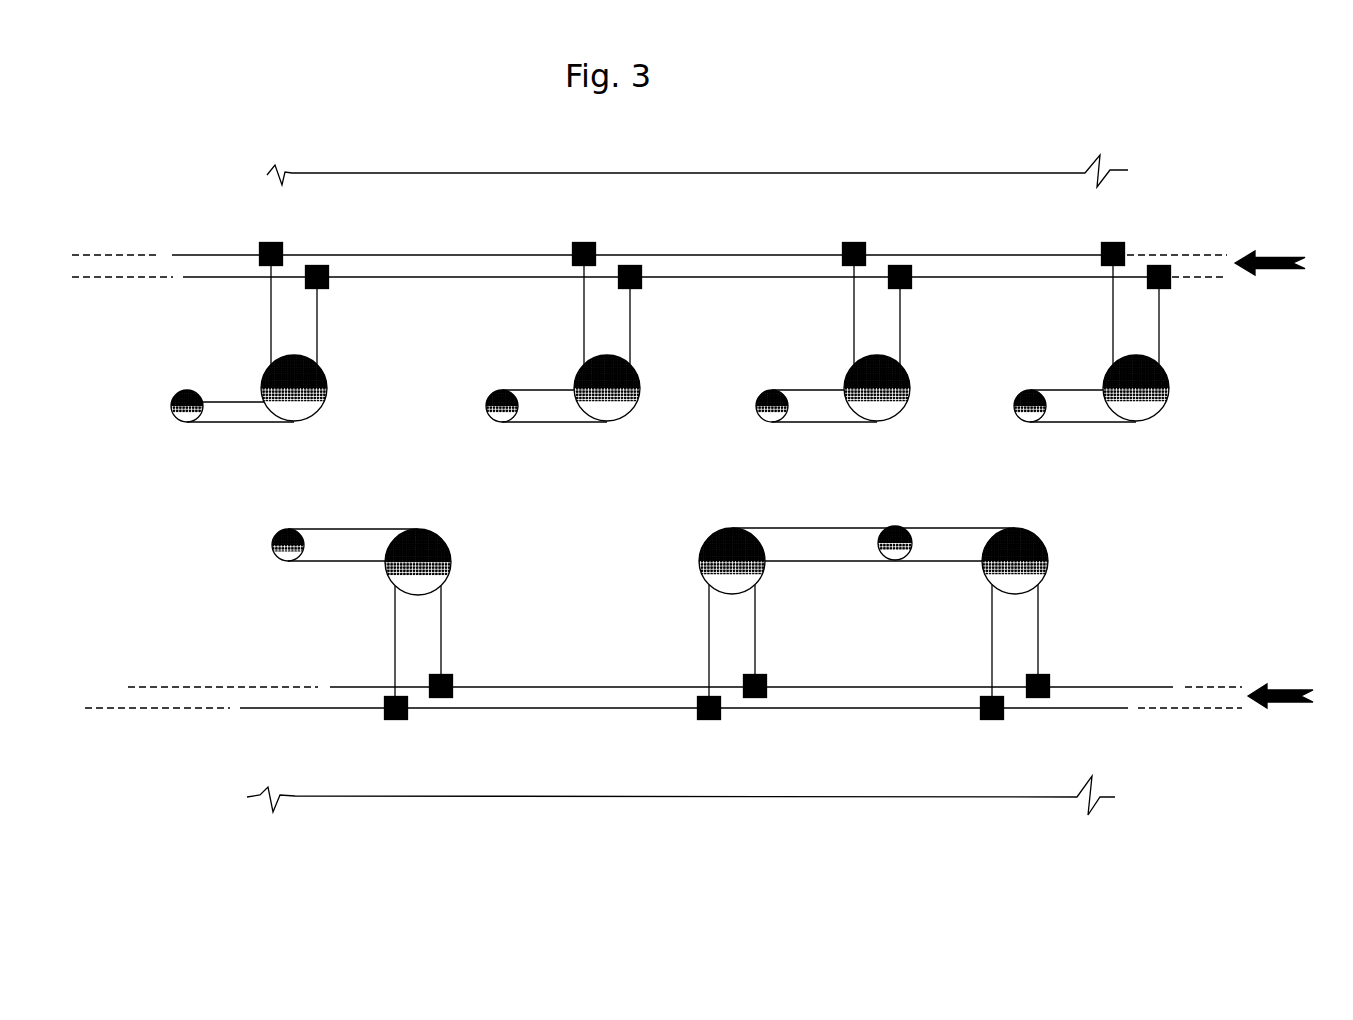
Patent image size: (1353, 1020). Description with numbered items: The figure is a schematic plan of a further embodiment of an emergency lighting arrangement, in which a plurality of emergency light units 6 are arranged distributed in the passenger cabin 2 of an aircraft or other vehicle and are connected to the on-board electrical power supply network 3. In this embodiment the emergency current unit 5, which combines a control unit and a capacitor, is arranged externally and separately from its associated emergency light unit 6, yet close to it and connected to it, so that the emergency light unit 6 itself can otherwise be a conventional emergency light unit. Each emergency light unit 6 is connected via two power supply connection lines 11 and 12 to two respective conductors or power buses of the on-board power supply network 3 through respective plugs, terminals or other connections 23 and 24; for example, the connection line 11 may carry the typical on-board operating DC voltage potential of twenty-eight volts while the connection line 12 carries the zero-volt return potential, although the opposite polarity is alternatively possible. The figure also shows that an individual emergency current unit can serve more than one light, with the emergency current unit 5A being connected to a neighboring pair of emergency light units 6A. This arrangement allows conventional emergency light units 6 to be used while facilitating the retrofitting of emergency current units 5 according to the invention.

The passenger cabin 2 is at (753, 228).
The on-board electrical power supply network 3 is at (1270, 274).
The emergency current unit 5 is at (490, 420).
The emergency light unit 6 is at (612, 418).
The emergency current unit 5A is at (895, 527).
The emergency light units 6A is at (717, 530).
The power supply connection line 11 is at (395, 647).
The power supply connection line 12 is at (442, 655).
The connection 23 is at (443, 700).
The connection 24 is at (394, 720).